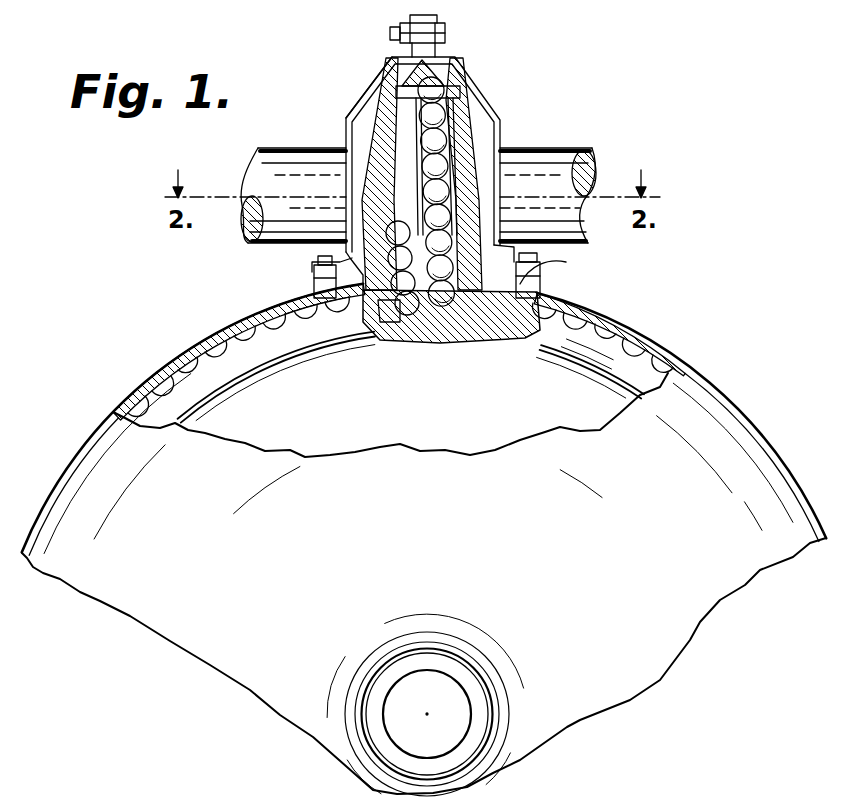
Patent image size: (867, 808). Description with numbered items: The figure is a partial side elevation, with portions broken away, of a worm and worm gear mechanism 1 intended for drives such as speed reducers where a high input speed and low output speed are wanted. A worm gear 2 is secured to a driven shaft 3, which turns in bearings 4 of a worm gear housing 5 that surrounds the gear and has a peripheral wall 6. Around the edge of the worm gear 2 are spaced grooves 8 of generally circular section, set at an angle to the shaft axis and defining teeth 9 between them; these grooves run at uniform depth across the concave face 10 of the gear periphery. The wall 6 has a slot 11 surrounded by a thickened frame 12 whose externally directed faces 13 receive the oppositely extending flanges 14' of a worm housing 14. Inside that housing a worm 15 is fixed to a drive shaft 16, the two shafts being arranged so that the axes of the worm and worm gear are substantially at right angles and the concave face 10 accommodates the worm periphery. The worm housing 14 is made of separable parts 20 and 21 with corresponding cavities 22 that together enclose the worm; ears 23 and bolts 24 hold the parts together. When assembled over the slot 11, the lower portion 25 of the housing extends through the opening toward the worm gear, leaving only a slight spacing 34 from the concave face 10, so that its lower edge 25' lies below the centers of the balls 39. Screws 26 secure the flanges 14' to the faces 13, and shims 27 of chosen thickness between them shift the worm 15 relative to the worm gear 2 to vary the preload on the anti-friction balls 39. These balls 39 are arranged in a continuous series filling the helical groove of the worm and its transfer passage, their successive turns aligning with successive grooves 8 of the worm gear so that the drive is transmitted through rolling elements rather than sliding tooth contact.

The worm and worm gear mechanism 1 is at (504, 140).
The worm gear 2 is at (651, 339).
The driven shaft 3 is at (405, 690).
The bearings 4 is at (470, 742).
The worm gear housing 5 is at (698, 624).
The peripheral wall 6 is at (685, 357).
The grooves 8 is at (226, 334).
The teeth 9 is at (191, 361).
The concave face 10 is at (556, 301).
The slot 11 is at (533, 266).
The frame 12 is at (539, 282).
The faces 13 is at (313, 283).
The worm housing 14 is at (491, 174).
The flanges 14' is at (572, 264).
The worm 15 is at (396, 108).
The drive shaft 16 is at (594, 161).
The housing part 20 is at (394, 67).
The housing part 21 is at (468, 75).
The cavities 22 is at (447, 90).
The ears 23 is at (414, 22).
The bolts 24 is at (446, 30).
The lower portion 25 is at (348, 247).
The lower edge 25' is at (380, 340).
The screws 26 is at (312, 268).
The shims 27 is at (300, 292).
The spacing 34 is at (363, 196).
The balls 39 is at (452, 343).